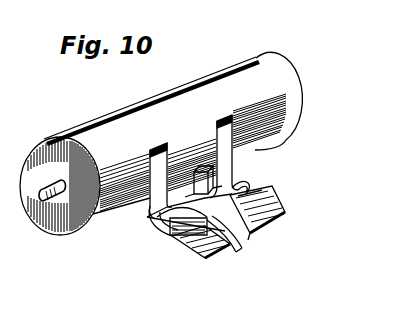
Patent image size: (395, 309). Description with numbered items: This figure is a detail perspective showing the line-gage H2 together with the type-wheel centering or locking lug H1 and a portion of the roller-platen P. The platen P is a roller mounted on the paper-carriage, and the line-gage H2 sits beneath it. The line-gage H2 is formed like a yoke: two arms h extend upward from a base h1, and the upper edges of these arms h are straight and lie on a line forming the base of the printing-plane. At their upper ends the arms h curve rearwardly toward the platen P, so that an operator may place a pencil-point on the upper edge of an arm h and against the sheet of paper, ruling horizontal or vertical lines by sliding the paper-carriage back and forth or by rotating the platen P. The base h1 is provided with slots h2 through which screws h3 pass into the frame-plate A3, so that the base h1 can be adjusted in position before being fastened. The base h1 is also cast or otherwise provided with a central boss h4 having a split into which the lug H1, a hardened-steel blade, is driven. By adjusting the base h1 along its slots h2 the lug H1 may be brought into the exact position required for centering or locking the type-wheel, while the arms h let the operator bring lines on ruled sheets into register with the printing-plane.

The roller-platen P is at (100, 117).
The arms h is at (160, 150).
The type-wheel centering or locking lug H1 is at (197, 166).
The line-gage H2 is at (240, 182).
The base h1 is at (240, 196).
The slots h2 is at (252, 258).
The screws h3 is at (262, 166).
The central boss h4 is at (192, 236).
The frame-plate A3 is at (255, 212).